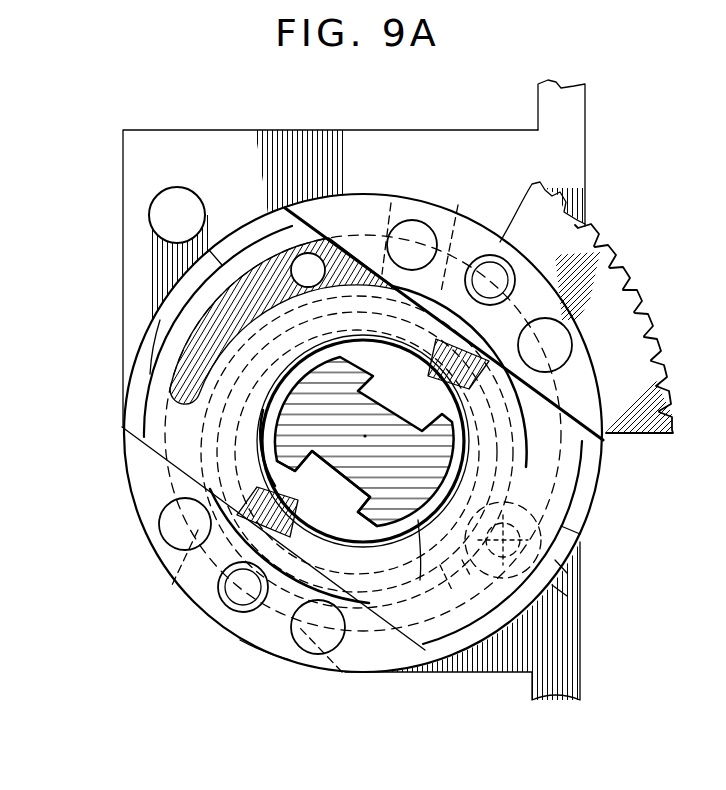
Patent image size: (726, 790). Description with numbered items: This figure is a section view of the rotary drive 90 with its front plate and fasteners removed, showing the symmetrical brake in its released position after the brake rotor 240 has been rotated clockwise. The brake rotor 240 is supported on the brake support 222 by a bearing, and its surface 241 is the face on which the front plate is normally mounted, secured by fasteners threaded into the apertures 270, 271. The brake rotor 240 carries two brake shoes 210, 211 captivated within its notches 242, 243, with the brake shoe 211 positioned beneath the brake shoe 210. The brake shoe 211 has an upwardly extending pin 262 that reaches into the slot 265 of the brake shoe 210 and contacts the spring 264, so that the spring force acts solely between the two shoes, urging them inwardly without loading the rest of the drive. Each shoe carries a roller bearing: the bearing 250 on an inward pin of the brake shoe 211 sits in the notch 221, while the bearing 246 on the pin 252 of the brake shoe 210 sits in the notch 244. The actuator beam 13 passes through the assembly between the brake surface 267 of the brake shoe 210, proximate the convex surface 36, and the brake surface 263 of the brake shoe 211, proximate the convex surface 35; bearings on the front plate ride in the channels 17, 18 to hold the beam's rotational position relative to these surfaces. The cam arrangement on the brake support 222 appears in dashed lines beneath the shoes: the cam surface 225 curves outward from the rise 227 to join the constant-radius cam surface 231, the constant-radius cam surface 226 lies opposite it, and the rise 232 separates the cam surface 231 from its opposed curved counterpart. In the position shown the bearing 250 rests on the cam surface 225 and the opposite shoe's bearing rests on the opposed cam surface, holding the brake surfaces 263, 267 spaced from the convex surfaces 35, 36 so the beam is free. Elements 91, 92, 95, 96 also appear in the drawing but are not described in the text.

The actuator beam 13 is at (427, 583).
The channel 17 is at (410, 392).
The channel 18 is at (340, 476).
The convex surface 35 is at (459, 570).
The convex surface 36 is at (207, 432).
The rotary drive 90 is at (135, 551).
The bracket 91 is at (575, 126).
The housing 92 is at (188, 150).
The pawl 95 is at (545, 238).
The mounting hole 96 is at (203, 195).
The brake shoe 210 is at (590, 497).
The brake shoe 211 is at (270, 145).
The notch 221 is at (212, 262).
The brake support 222 is at (342, 676).
The cam surface 225 is at (407, 222).
The cam surface 226 is at (522, 330).
The rise 227 is at (456, 228).
The cam surface 231 is at (227, 543).
The rise 232 is at (350, 650).
The brake rotor 240 is at (263, 649).
The surface 241 is at (290, 648).
The notch 242 is at (356, 252).
The notch 243 is at (570, 396).
The notch 244 is at (565, 550).
The bearing 246 is at (567, 573).
The bearing 250 is at (182, 318).
The pin 252 is at (567, 596).
The pin 262 is at (316, 254).
The brake surface 263 is at (530, 452).
The spring 264 is at (298, 205).
The slot 265 is at (150, 374).
The brake surface 267 is at (265, 403).
The aperture 270 is at (223, 607).
The aperture 271 is at (585, 252).